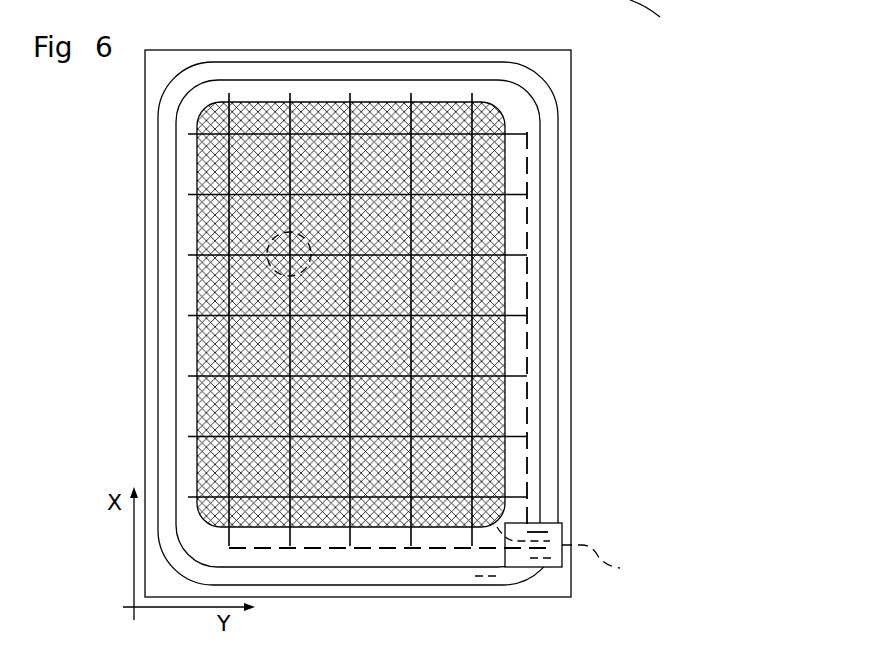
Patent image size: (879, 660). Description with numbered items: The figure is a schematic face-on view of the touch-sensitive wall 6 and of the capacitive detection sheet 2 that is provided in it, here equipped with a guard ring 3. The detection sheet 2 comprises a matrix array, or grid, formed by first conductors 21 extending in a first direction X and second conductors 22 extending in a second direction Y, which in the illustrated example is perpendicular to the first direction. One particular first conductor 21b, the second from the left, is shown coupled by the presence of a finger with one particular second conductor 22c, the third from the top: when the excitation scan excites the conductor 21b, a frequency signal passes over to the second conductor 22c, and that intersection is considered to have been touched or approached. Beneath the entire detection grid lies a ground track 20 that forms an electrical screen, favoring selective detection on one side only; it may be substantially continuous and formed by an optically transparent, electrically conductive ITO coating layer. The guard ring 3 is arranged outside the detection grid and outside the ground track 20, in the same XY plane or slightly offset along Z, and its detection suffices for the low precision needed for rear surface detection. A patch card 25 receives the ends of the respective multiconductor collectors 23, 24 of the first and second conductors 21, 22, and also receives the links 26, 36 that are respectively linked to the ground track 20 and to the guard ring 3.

The capacitive detection sheet 2 is at (150, 180).
The guard ring 3 is at (165, 333).
The touch-sensitive wall 6 is at (138, 261).
The ground track 20 is at (198, 398).
The first conductors 21 is at (475, 224).
The first conductor 21b is at (290, 100).
The second conductors 22 is at (260, 498).
The second conductor 22c is at (196, 255).
The multiconductor collector 23 is at (380, 550).
The multiconductor collector 24 is at (530, 283).
The patch card 25 is at (555, 567).
The link 26 is at (512, 538).
The link 36 is at (540, 557).